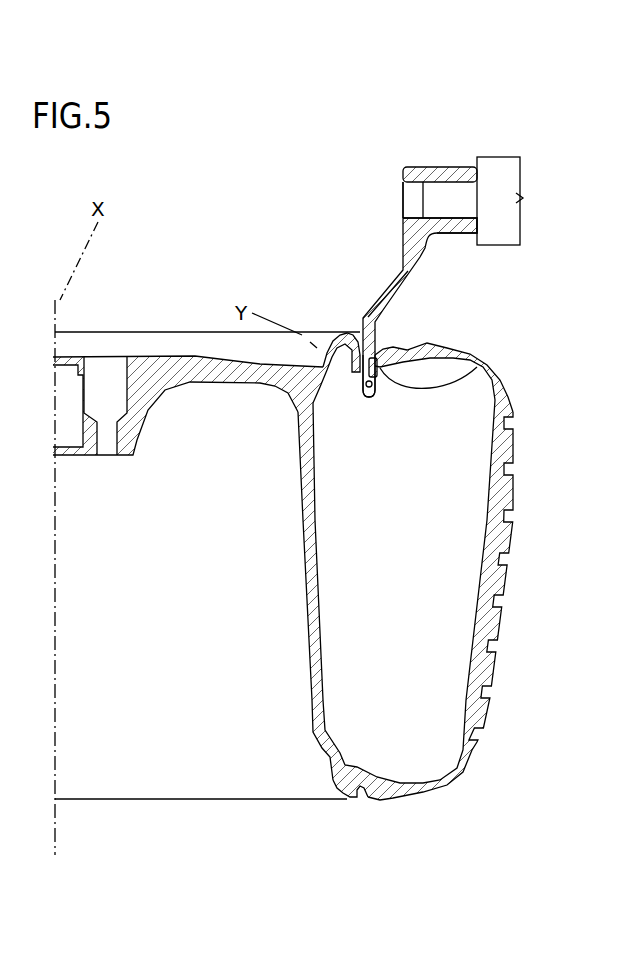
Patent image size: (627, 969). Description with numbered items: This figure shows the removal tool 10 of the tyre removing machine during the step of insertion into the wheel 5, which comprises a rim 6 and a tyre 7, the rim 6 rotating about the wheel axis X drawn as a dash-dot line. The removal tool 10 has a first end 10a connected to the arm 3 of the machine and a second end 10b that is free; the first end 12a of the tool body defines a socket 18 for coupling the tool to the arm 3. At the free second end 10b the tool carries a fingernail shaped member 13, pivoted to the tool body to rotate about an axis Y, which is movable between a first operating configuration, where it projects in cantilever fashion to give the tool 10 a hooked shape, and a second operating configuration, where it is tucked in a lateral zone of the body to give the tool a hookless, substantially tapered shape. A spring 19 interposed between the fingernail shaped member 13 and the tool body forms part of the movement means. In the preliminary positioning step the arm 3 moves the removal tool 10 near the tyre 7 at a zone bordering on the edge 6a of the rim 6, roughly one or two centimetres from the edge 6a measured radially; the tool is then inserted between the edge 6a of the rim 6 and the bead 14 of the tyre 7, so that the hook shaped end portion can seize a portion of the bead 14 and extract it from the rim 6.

The arm 3 is at (493, 173).
The wheel 5 is at (523, 460).
The rim 6 is at (210, 364).
The edge of the rim 6a is at (350, 333).
The tyre 7 is at (502, 582).
The removal tool 10 is at (380, 260).
The first end of the removal tool 10a is at (405, 232).
The second end of the removal tool 10b is at (364, 398).
The first end of the tool body 12a is at (438, 165).
The fingernail shaped member 13 is at (385, 348).
The bead 14 is at (402, 368).
The socket 18 is at (412, 189).
The spring 19 is at (380, 378).